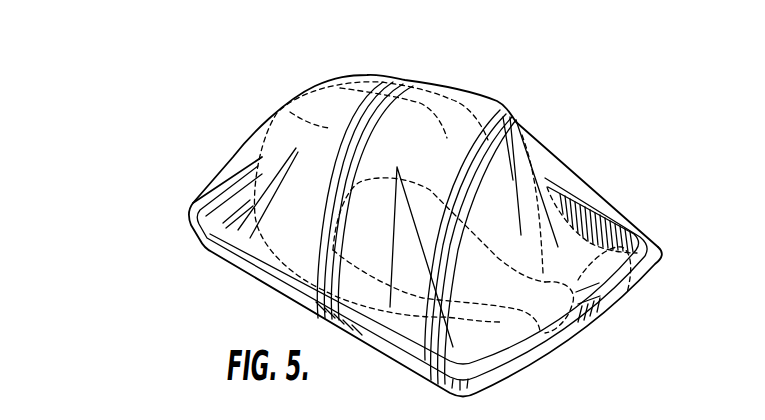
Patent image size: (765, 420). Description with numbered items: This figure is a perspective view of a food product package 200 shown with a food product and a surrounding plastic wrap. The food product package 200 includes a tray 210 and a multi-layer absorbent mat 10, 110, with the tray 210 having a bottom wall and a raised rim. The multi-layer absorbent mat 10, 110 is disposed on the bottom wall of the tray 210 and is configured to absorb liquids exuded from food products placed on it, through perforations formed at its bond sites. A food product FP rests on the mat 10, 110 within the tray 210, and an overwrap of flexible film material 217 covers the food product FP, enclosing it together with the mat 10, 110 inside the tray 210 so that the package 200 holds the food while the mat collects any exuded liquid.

The food product package 200 is at (530, 72).
The tray 210 is at (208, 248).
The flexible film material 217 is at (230, 160).
The multi-layer absorbent mat 10 is at (359, 254).
The multi-layer absorbent mat 110 is at (253, 238).
The food product FP is at (310, 128).